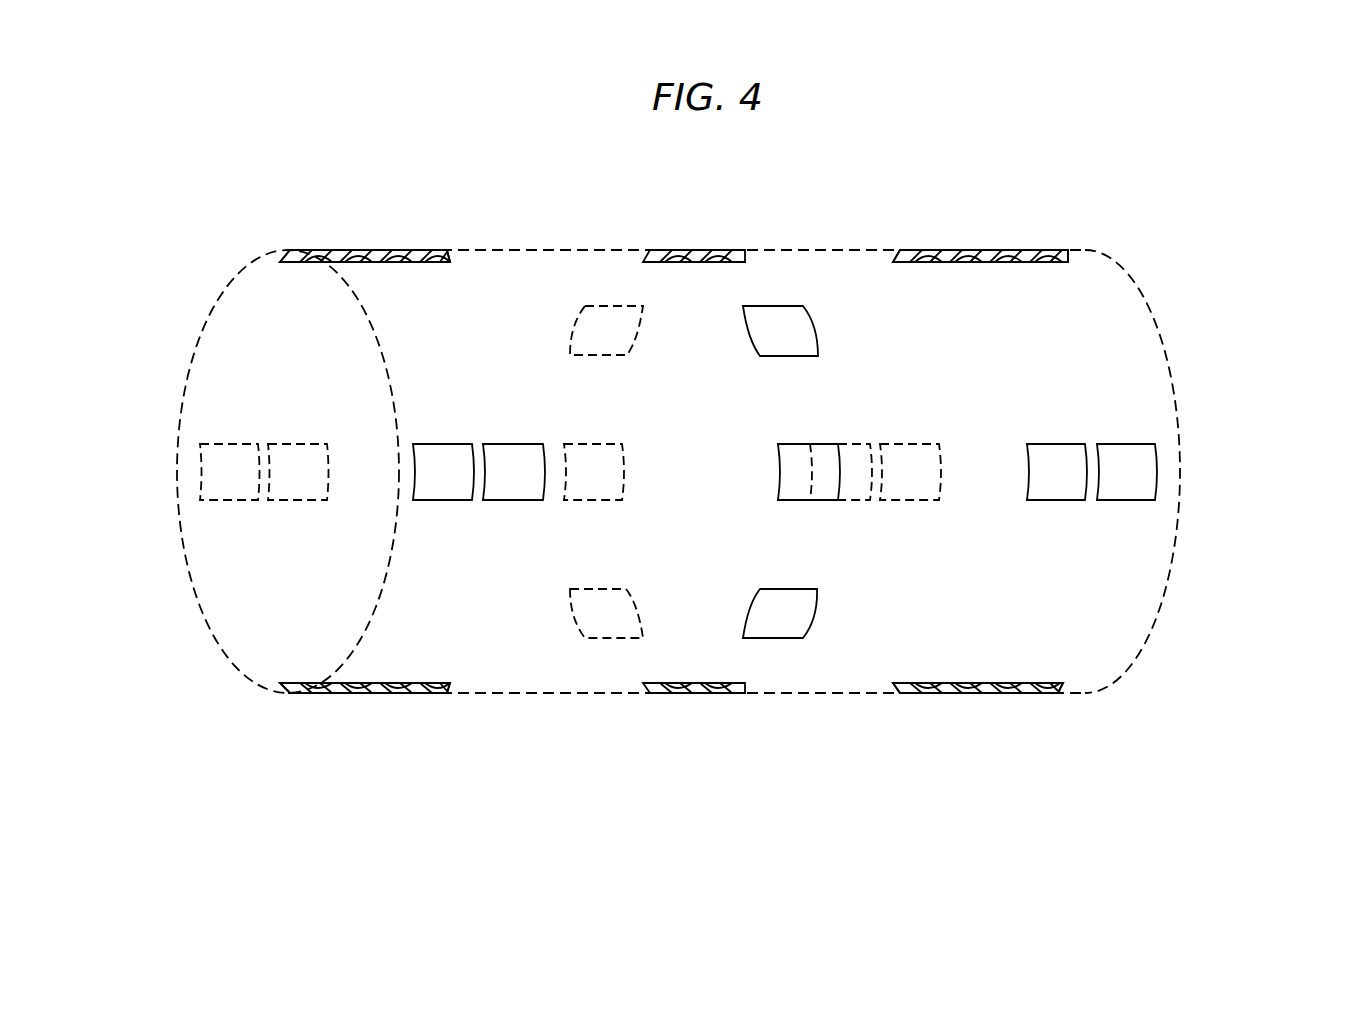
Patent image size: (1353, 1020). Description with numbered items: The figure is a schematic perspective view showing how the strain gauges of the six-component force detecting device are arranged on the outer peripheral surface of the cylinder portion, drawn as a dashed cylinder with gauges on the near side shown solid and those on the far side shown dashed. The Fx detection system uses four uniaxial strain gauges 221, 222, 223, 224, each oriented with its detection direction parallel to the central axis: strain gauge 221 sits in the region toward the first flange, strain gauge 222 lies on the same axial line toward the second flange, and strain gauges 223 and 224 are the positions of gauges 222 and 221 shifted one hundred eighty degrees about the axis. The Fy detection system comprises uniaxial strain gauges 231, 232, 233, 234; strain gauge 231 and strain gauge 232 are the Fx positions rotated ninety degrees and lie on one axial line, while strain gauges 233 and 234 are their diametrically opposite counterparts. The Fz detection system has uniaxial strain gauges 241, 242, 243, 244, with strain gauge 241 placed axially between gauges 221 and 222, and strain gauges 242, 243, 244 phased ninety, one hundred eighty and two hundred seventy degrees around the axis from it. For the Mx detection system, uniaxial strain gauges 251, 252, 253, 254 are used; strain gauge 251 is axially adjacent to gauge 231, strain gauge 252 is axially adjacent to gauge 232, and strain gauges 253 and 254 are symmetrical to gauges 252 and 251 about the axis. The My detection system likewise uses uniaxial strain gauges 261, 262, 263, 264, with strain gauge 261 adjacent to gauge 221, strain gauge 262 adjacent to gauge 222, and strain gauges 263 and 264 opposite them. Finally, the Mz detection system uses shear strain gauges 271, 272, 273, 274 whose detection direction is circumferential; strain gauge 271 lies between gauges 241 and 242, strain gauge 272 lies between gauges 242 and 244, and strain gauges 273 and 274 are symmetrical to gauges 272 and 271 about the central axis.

The strain gauge 221 is at (326, 250).
The strain gauge 222 is at (990, 250).
The strain gauge 223 is at (1014, 690).
The strain gauge 224 is at (338, 693).
The strain gauge 231 is at (423, 452).
The strain gauge 232 is at (1125, 452).
The strain gauge 233 is at (935, 469).
The strain gauge 234 is at (200, 482).
The strain gauge 241 is at (697, 250).
The strain gauge 242 is at (824, 444).
The strain gauge 243 is at (598, 444).
The strain gauge 244 is at (695, 693).
The strain gauge 251 is at (512, 498).
The strain gauge 252 is at (1042, 498).
The strain gauge 253 is at (867, 450).
The strain gauge 254 is at (272, 493).
The strain gauge 261 is at (404, 250).
The strain gauge 262 is at (948, 250).
The strain gauge 263 is at (940, 690).
The strain gauge 264 is at (403, 693).
The strain gauge 271 is at (778, 306).
The strain gauge 272 is at (793, 638).
The strain gauge 273 is at (607, 306).
The strain gauge 274 is at (607, 638).